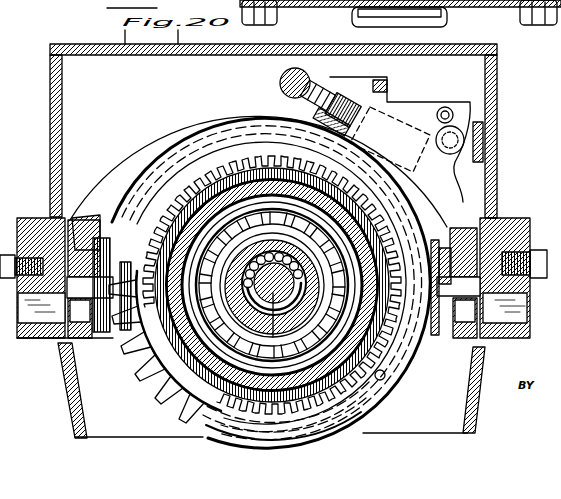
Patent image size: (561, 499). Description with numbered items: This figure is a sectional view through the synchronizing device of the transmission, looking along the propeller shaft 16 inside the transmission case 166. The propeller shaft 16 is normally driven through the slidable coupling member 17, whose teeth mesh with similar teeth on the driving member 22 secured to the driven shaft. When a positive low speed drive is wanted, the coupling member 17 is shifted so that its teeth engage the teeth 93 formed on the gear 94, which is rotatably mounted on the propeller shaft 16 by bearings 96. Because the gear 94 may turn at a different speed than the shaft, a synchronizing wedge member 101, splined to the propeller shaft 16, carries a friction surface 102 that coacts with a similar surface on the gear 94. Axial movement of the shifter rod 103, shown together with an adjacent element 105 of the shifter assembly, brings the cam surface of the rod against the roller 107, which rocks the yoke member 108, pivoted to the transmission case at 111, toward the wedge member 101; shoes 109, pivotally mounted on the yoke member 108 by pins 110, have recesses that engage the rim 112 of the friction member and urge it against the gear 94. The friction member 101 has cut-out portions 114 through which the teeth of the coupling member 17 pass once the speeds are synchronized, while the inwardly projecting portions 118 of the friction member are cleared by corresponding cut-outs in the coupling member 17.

The propeller shaft 16 is at (293, 240).
The slidable coupling member 17 is at (273, 337).
The driving member 22 is at (41, 278).
The teeth 93 is at (230, 167).
The gear 94 is at (160, 400).
The bearings 96 is at (298, 228).
The wedge member 101 is at (145, 200).
The friction surface 102 is at (132, 352).
The shifter rod 103 is at (280, 77).
The spring 105 is at (313, 77).
The roller 107 is at (280, 92).
The yoke member 108 is at (103, 180).
The shoes 109 is at (118, 335).
The pins 110 is at (58, 347).
The pivot 111 is at (460, 347).
The rim 112 is at (122, 197).
The cut-out portions 114 is at (385, 378).
The inwardly projecting portions 118 is at (182, 200).
The transmission case 166 is at (50, 148).